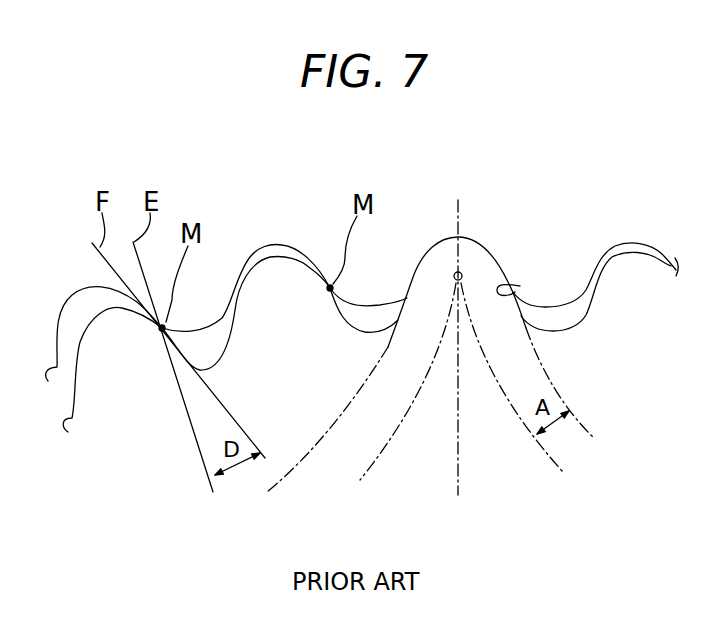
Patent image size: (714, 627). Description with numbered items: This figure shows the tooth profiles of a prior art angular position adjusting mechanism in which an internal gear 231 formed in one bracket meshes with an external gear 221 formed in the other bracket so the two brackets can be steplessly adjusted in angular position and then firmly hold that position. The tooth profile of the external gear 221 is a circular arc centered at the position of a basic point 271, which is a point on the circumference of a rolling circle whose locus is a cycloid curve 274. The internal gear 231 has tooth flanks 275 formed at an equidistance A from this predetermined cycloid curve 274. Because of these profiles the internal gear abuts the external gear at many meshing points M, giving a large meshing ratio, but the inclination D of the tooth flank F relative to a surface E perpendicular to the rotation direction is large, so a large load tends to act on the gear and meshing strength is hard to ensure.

The external gear 221 is at (297, 273).
The internal gear 231 is at (375, 293).
The basic point 271 is at (466, 272).
The cycloid curve 274 is at (493, 353).
The tooth flank 275 is at (520, 286).